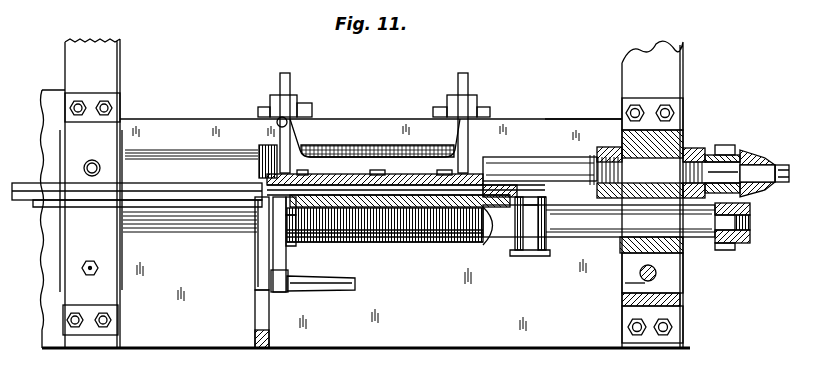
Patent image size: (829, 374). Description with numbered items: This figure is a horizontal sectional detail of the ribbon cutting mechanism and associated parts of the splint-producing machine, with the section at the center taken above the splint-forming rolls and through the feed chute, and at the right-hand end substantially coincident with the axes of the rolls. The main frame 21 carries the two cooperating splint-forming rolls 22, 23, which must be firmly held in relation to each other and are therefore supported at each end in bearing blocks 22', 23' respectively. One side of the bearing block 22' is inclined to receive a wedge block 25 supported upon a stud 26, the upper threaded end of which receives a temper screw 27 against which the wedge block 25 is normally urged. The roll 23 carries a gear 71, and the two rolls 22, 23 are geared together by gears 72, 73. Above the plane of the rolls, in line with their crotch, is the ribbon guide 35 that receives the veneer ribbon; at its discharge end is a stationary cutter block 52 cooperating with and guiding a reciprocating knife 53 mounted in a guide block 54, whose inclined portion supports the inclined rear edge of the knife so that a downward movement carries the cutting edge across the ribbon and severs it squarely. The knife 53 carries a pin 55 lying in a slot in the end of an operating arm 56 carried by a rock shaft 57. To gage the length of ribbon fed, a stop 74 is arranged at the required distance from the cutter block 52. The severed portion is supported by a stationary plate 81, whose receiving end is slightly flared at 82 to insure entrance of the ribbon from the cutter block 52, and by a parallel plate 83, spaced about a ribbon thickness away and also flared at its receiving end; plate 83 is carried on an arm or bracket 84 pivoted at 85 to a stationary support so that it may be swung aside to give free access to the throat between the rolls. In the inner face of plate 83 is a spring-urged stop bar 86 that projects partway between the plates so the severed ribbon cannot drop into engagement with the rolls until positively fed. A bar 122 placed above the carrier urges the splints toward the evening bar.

The main frame 21 is at (117, 70).
The splint-forming roll 22 is at (568, 227).
The bearing block 22' is at (679, 264).
The splint-forming roll 23 is at (375, 117).
The bearing block 23' is at (669, 137).
The wedge block 25 is at (627, 287).
The stud 26 is at (657, 277).
The temper screw 27 is at (97, 270).
The ribbon guide 35 is at (162, 190).
The stationary cutter block 52 is at (250, 190).
The reciprocating knife 53 is at (262, 225).
The guide block 54 is at (258, 237).
The pin 55 is at (292, 202).
The operating arm 56 is at (285, 292).
The rock shaft 57 is at (337, 290).
The gear 71 is at (765, 152).
The gear 72 is at (737, 248).
The gear 73 is at (730, 145).
The stop 74 is at (494, 240).
The stationary plate 81 is at (445, 205).
The flared receiving end 82 is at (298, 205).
The plate 83 is at (386, 183).
The arm or bracket 84 is at (417, 162).
The pivot 85 is at (282, 100).
The stop bar 86 is at (358, 203).
The bar 122 is at (562, 132).